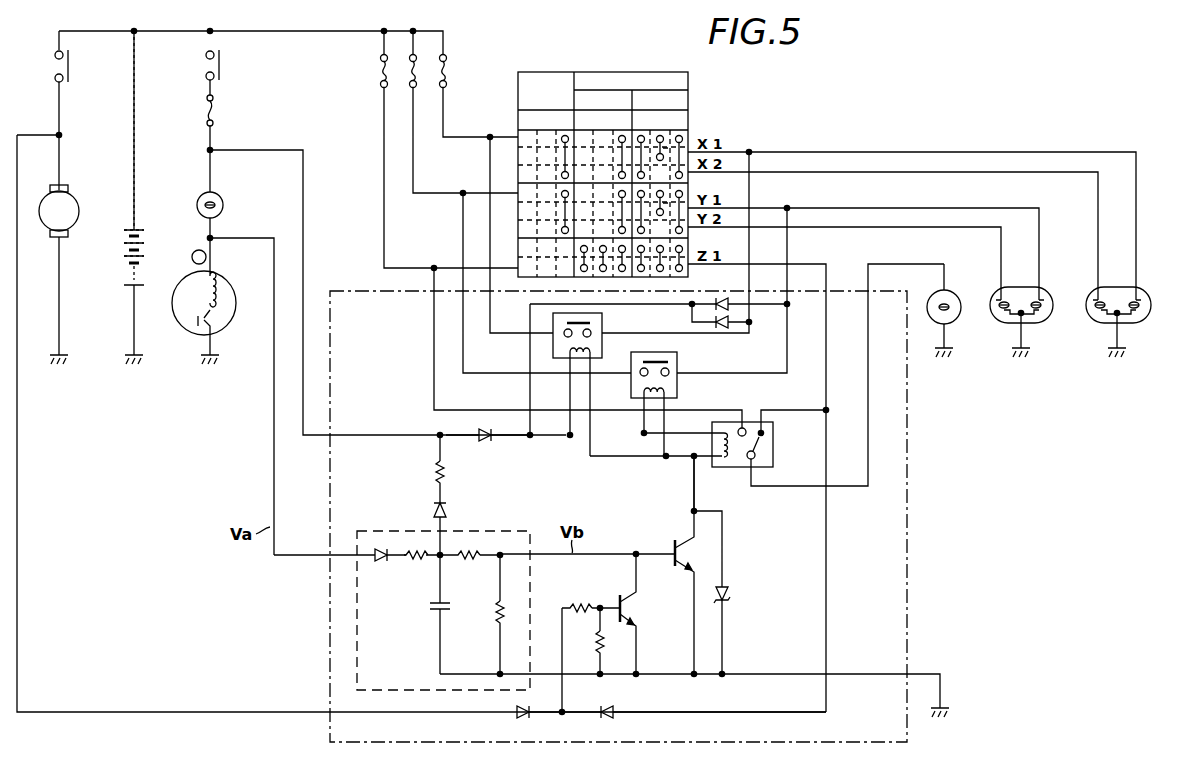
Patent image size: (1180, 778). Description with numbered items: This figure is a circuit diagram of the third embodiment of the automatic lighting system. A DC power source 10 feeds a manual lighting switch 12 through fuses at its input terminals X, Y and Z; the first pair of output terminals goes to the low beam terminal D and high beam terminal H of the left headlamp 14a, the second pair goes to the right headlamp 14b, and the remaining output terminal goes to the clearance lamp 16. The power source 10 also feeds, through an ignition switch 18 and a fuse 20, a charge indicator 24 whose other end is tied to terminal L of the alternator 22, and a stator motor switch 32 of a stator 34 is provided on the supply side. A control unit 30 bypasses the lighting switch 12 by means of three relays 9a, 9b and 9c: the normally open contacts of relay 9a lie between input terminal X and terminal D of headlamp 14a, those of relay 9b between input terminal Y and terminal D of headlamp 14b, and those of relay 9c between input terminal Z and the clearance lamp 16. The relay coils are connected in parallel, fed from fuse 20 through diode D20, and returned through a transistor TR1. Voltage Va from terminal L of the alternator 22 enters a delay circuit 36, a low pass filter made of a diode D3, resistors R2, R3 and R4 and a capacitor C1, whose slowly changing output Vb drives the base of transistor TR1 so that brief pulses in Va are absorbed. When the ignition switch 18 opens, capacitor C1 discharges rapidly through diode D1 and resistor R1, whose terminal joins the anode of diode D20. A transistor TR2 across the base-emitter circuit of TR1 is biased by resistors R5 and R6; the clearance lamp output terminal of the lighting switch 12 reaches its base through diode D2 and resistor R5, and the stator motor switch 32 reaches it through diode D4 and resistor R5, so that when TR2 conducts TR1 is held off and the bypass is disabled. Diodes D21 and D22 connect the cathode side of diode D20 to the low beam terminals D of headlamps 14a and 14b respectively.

The stator motor switch 32 is at (70, 66).
The stator 34 is at (76, 200).
The DC power source 10 is at (121, 250).
The ignition switch 18 is at (221, 66).
The fuse 20 is at (205, 112).
The charge indicator 24 is at (198, 200).
The alternator 22 is at (190, 335).
The manual lighting switch 12 is at (601, 72).
The control unit 30 is at (907, 522).
The clearance lamp 16 is at (953, 298).
The left headlamp 14a is at (1088, 325).
The right headlamp 14b is at (994, 325).
The relay 9a is at (604, 322).
The relay 9b is at (679, 385).
The relay 9c is at (776, 458).
The delay circuit 36 is at (488, 531).
The diode D20 is at (490, 444).
The diode D21 is at (730, 330).
The diode D22 is at (658, 290).
The diode D1 is at (456, 529).
The diode D2 is at (694, 725).
The diode D3 is at (339, 569).
The diode D4 is at (538, 725).
The resistor R1 is at (456, 469).
The resistor R2 is at (421, 570).
The resistor R3 is at (470, 570).
The resistor R4 is at (486, 614).
The resistor R5 is at (581, 648).
The resistor R6 is at (613, 641).
The capacitor C1 is at (431, 614).
The transistor TR1 is at (665, 542).
The transistor TR2 is at (638, 614).